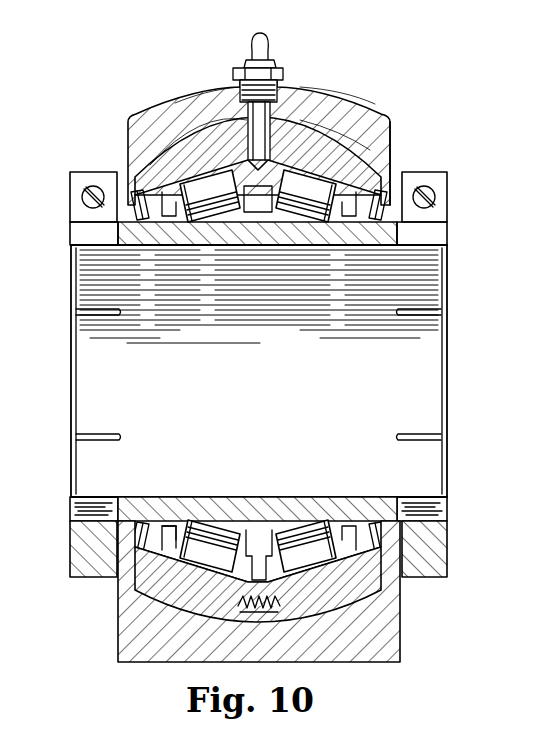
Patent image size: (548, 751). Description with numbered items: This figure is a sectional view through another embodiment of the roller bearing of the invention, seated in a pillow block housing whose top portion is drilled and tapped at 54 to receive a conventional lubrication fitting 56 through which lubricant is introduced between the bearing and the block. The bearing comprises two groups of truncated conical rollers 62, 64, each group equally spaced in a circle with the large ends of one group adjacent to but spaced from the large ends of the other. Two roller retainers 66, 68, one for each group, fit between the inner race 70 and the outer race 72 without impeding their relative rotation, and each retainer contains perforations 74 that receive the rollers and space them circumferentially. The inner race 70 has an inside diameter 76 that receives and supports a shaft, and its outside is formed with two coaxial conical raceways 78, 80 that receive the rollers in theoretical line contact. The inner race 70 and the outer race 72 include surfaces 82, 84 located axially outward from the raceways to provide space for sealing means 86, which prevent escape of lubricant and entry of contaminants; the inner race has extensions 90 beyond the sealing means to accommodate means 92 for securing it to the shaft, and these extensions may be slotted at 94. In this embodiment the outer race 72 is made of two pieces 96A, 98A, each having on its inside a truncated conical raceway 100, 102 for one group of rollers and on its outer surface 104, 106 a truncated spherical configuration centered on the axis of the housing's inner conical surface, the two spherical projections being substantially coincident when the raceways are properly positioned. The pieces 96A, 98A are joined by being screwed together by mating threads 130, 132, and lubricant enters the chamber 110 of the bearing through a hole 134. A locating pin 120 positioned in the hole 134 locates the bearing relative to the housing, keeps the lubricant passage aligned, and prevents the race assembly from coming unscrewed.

The lubrication fitting 56 is at (259, 33).
The drilled and tapped hole 54 is at (277, 95).
The outer race piece 96A is at (132, 117).
The outer race piece 98A is at (368, 133).
The hole 134 is at (197, 130).
The outer surface 104 is at (217, 112).
The outer surface 106 is at (366, 97).
The locating pin 120 is at (333, 137).
The outer race 72 is at (393, 146).
The sealing means 86 is at (390, 185).
The securing means 92 is at (72, 186).
The surface 84 is at (395, 233).
The slot 94 is at (110, 243).
The extension 90 is at (437, 237).
The inside diameter 76 is at (385, 246).
The surface 82 is at (153, 246).
The truncated conical rollers 62 is at (210, 196).
The truncated conical rollers 64 is at (306, 196).
The inner race 70 is at (243, 513).
The conical raceway 80 is at (300, 543).
The roller retainer 66 is at (160, 540).
The perforations 74 is at (207, 527).
The conical raceway 78 is at (212, 535).
The chamber 110 is at (258, 552).
The roller retainer 68 is at (347, 520).
The truncated conical raceway 100 is at (188, 560).
The truncated conical raceway 102 is at (315, 565).
The mating thread 130 is at (255, 605).
The mating thread 132 is at (268, 605).